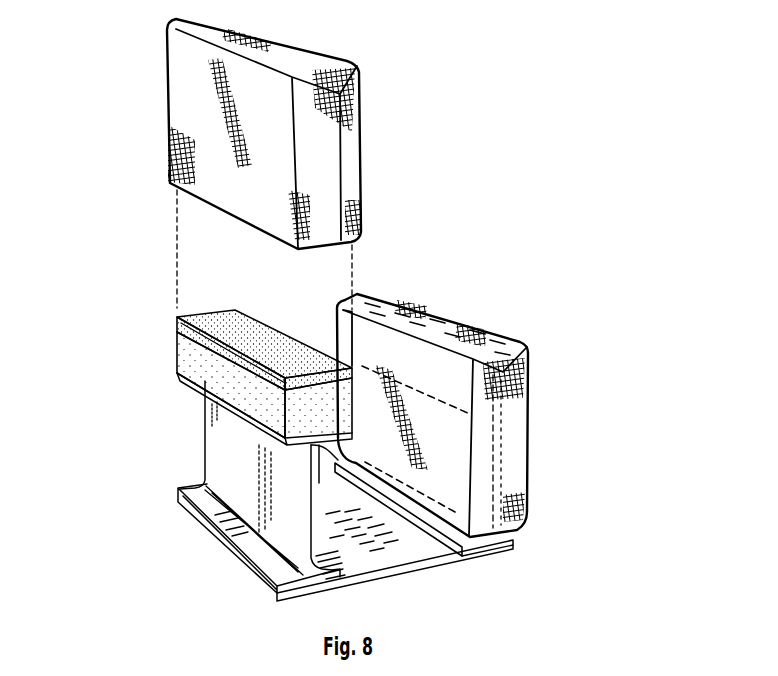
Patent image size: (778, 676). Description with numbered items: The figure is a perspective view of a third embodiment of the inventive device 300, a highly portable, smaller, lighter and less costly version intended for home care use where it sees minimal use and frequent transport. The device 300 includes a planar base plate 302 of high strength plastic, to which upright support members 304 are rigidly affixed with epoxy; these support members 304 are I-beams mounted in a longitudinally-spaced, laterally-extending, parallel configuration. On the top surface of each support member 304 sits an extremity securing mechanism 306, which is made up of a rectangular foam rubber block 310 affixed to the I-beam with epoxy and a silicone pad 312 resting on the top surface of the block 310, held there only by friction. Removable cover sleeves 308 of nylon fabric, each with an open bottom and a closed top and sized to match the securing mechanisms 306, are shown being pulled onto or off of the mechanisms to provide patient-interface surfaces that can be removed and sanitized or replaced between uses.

The device 300 is at (555, 131).
The base plate 302 is at (403, 548).
The upright support members 304 is at (241, 481).
The extremity securing mechanisms 306 is at (160, 364).
The removable cover sleeves 308 is at (188, 96).
The foam rubber blocks 310 is at (222, 380).
The silicone pads 312 is at (192, 329).